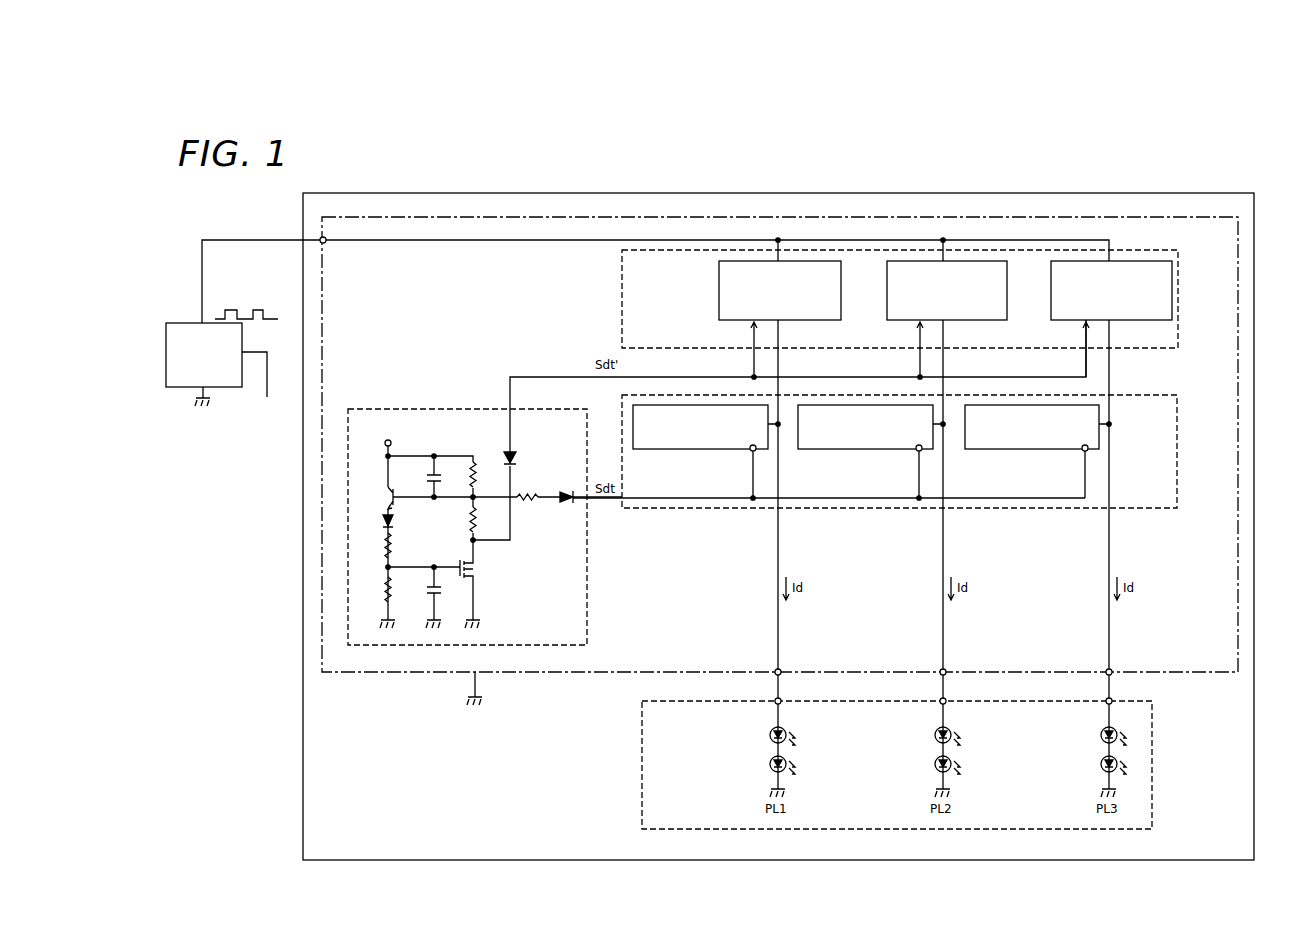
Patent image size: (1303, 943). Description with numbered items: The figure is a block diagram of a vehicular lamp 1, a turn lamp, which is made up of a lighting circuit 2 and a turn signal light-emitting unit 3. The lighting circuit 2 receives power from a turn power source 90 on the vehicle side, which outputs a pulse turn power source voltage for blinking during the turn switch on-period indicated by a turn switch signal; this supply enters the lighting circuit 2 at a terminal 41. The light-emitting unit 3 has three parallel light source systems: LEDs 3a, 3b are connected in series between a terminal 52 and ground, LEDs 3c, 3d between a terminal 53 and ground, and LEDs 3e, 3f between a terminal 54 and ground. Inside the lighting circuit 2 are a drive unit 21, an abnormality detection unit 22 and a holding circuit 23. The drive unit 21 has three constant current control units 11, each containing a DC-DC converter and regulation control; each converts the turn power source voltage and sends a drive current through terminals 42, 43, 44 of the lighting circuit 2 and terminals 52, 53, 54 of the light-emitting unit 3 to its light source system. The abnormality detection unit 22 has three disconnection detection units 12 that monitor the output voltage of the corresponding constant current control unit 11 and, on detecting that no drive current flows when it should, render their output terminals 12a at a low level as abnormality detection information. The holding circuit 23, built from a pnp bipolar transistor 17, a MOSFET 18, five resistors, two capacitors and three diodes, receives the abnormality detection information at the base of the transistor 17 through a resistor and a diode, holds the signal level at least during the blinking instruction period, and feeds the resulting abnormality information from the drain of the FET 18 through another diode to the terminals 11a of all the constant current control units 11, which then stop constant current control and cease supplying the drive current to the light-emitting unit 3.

The vehicular lamp 1 is at (933, 195).
The lighting circuit 2 is at (1011, 218).
The turn signal light-emitting unit 3 is at (642, 750).
The LED 3a is at (770, 736).
The LED 3b is at (770, 766).
The LED 3c is at (935, 736).
The LED 3d is at (935, 766).
The LED 3e is at (1101, 736).
The LED 3f is at (1101, 766).
The constant current control unit 11 is at (719, 288).
The terminal 11a is at (752, 324).
The disconnection detection unit 12 is at (649, 449).
The output terminal 12a is at (750, 451).
The pnp bipolar transistor 17 is at (391, 496).
The MOSFET 18 is at (478, 572).
The drive unit 21 is at (622, 288).
The abnormality detection unit 22 is at (1177, 500).
The holding circuit 23 is at (437, 409).
The power input terminal 41 is at (326, 243).
The terminal 42 is at (776, 670).
The terminal 43 is at (941, 670).
The terminal 44 is at (1107, 670).
The terminal 52 is at (775, 704).
The terminal 53 is at (940, 704).
The terminal 54 is at (1106, 704).
The turn power source 90 is at (186, 323).